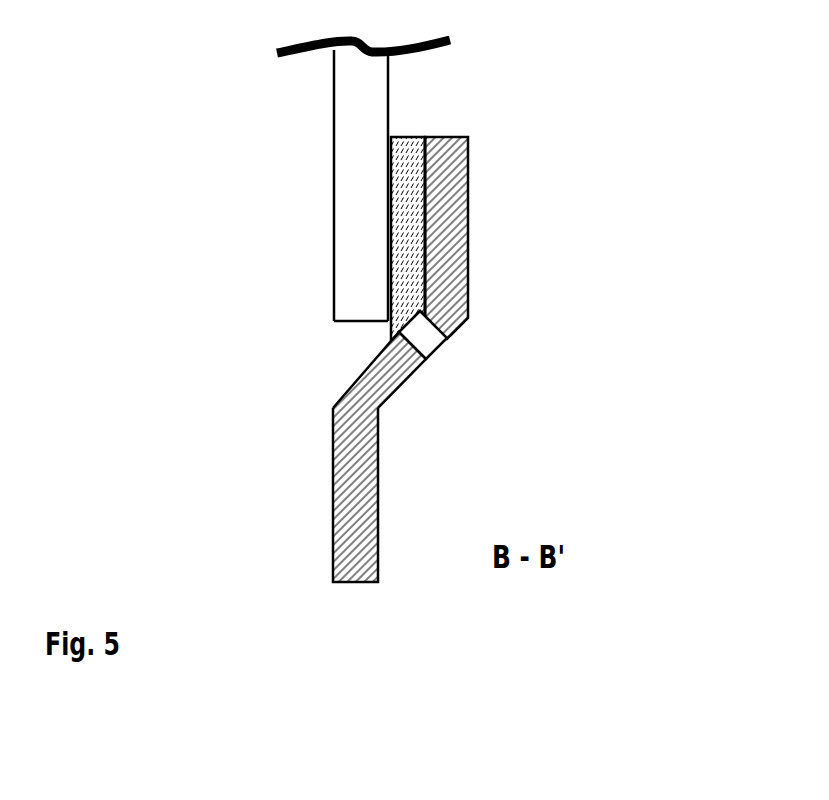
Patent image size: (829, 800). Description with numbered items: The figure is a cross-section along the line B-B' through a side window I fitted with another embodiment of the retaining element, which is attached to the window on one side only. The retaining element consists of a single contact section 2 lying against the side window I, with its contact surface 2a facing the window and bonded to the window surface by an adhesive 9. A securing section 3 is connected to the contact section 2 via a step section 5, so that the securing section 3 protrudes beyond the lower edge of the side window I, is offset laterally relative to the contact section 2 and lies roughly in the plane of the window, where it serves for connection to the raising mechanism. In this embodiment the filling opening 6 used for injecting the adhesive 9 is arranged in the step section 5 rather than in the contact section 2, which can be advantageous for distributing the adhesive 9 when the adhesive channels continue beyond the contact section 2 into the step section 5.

The side window I is at (347, 127).
The adhesive 9 is at (405, 152).
The contact section 2 is at (453, 170).
The contact surface 2a is at (416, 245).
The step section 5 is at (378, 378).
The securing section 3 is at (343, 477).
The filling opening 6 is at (423, 342).